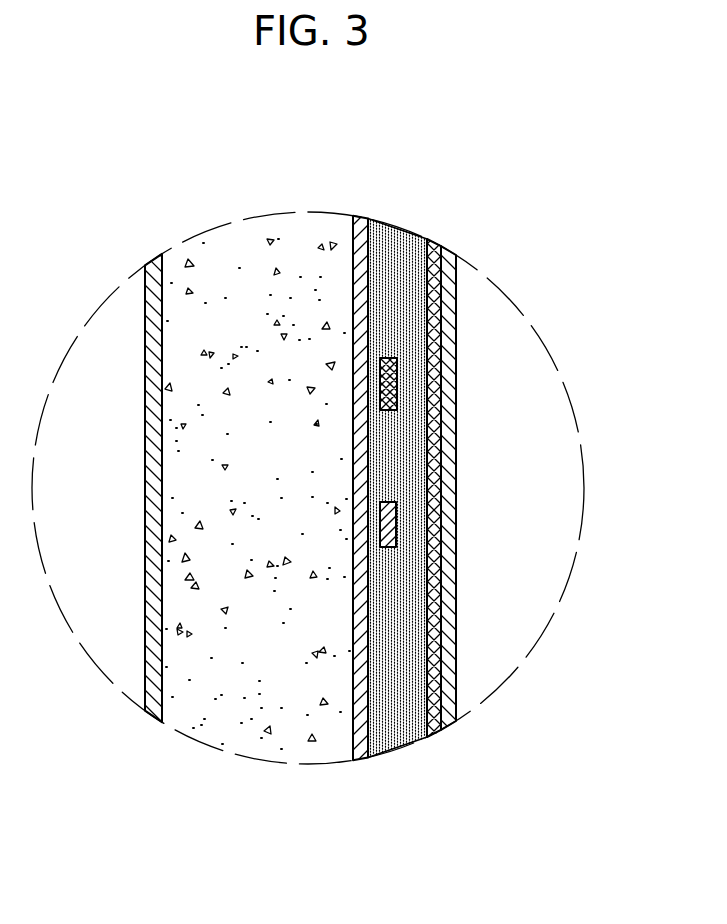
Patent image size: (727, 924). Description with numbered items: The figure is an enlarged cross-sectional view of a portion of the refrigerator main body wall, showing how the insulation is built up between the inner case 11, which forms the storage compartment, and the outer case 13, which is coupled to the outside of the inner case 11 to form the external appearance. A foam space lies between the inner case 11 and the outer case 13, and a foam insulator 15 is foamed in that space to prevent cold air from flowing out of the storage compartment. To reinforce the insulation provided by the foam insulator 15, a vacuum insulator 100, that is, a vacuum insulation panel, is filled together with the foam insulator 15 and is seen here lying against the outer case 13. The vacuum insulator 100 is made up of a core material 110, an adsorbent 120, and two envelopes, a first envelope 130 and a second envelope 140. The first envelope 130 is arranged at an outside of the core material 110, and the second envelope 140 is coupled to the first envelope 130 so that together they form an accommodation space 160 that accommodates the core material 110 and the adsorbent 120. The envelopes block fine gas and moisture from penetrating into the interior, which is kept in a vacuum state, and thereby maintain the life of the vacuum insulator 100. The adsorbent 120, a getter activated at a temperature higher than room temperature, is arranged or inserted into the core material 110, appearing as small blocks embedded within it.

The inner case 11 is at (150, 293).
The outer case 13 is at (456, 298).
The foam insulator 15 is at (300, 242).
The vacuum insulator 100 is at (423, 558).
The core material 110 is at (385, 737).
The adsorbent 120 is at (397, 529).
The first envelope 130 is at (430, 737).
The second envelope 140 is at (362, 752).
The accommodation space 160 is at (387, 266).